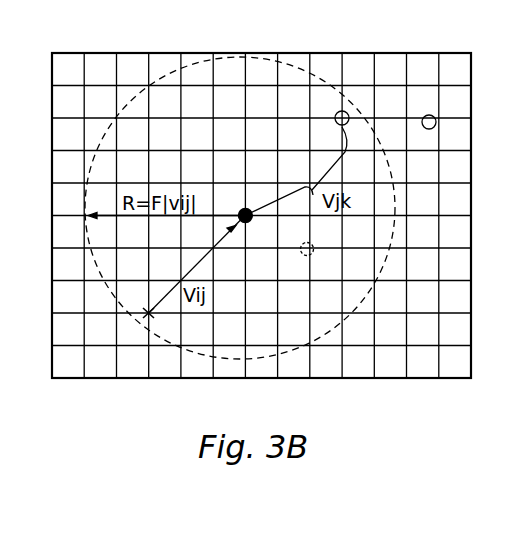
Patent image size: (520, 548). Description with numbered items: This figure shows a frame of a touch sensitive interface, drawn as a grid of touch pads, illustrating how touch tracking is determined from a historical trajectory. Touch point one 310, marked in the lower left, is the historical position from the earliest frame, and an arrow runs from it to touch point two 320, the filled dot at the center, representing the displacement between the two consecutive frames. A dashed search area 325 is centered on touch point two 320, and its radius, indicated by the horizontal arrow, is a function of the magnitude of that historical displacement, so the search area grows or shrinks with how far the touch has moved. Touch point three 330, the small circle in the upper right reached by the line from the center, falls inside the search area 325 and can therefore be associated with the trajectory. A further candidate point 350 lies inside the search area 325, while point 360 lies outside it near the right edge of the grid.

The touch point one 310 is at (150, 316).
The touch point two 320 is at (252, 217).
The search area 325 is at (295, 60).
The touch point three 330 is at (336, 112).
The candidate node within radius 350 is at (312, 254).
The node outside radius 360 is at (433, 128).